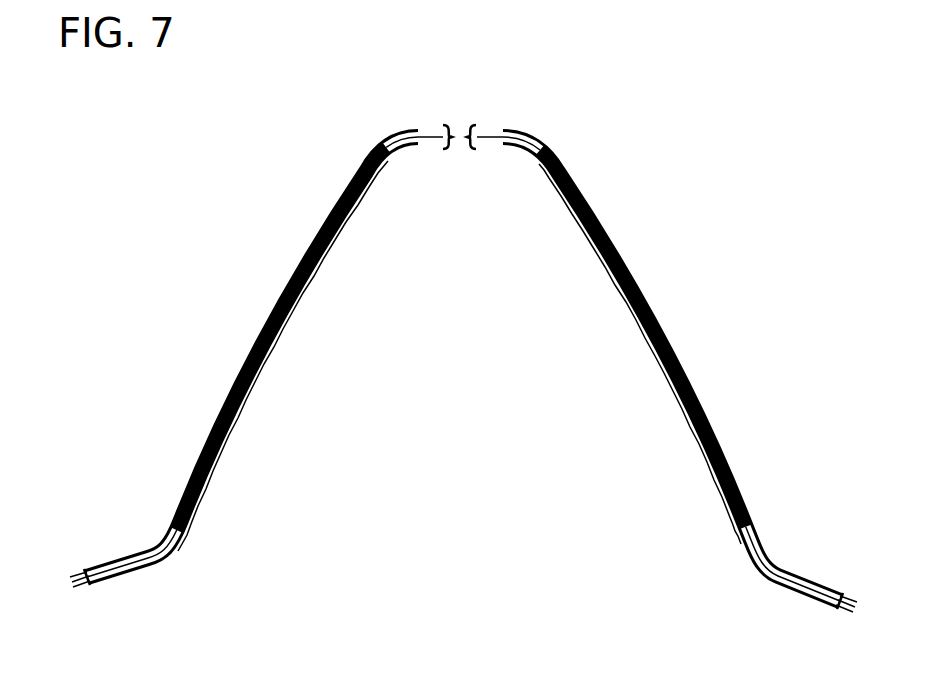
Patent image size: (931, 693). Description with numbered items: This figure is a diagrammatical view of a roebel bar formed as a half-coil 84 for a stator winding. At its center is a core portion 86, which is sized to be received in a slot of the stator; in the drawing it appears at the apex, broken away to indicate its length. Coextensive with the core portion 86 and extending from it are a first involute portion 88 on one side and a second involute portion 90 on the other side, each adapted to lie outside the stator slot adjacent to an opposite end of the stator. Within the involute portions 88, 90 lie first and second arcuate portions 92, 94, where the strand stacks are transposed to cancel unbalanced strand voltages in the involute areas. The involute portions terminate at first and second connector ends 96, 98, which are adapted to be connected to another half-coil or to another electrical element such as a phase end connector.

The half-coil 84 is at (580, 170).
The core portion 86 is at (482, 118).
The first involute portion 88 is at (281, 252).
The second involute portion 90 is at (671, 364).
The first arcuate portion 92 is at (277, 341).
The second arcuate portion 94 is at (655, 350).
The first connector end 96 is at (127, 583).
The second connector end 98 is at (827, 587).